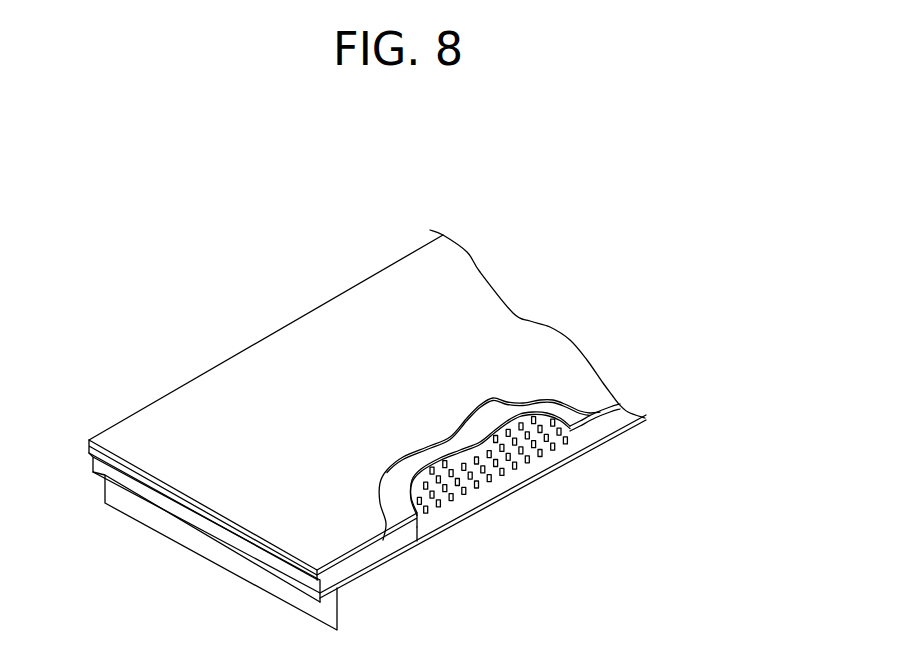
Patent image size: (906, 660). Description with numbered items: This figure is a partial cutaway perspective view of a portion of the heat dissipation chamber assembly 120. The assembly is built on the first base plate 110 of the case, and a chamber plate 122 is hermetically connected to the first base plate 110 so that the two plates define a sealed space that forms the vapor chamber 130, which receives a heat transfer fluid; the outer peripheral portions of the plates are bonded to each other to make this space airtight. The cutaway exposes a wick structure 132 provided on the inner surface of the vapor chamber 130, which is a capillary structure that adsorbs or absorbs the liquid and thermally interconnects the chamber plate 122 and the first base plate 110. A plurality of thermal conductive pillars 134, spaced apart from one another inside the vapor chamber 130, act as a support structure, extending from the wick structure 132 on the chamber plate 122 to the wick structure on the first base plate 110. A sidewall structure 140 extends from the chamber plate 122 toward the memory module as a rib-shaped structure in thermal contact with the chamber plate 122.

The heat dissipation chamber assembly 120 is at (404, 167).
The first base plate 110 is at (343, 561).
The chamber plate 122 is at (406, 553).
The vapor chamber 130 is at (529, 479).
The wick structure 132 is at (551, 425).
The thermal conductive pillars 134 is at (491, 474).
The sidewall structure 140 is at (223, 556).